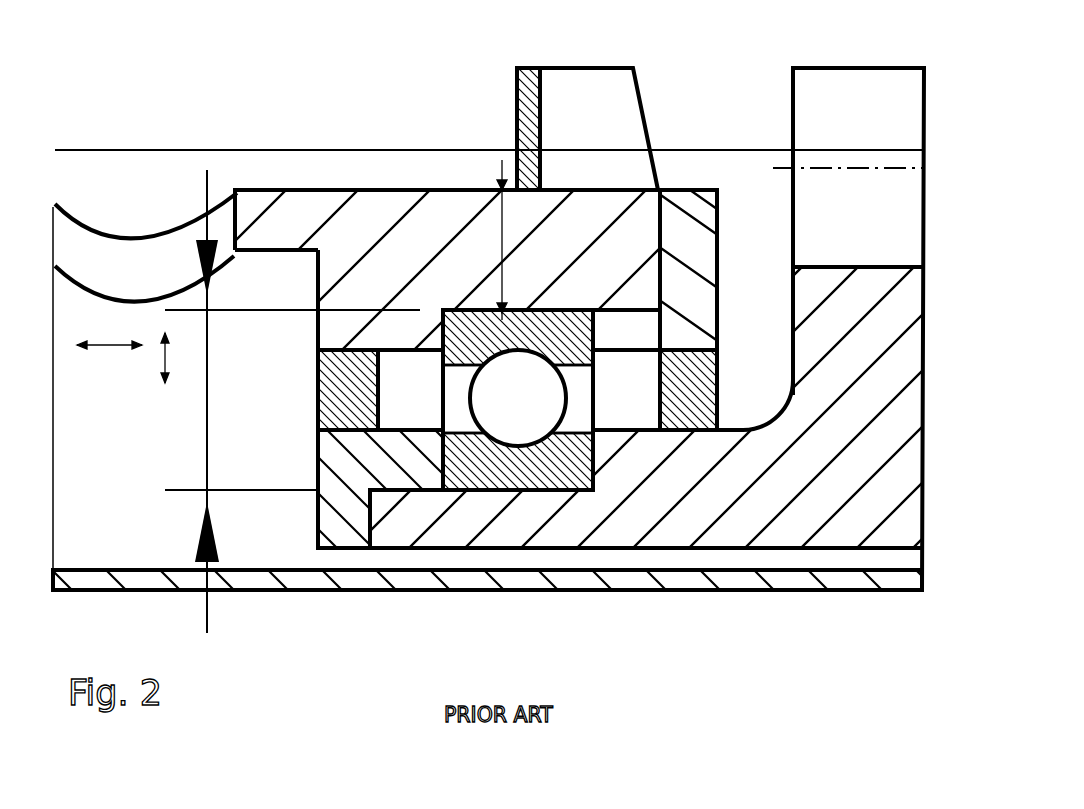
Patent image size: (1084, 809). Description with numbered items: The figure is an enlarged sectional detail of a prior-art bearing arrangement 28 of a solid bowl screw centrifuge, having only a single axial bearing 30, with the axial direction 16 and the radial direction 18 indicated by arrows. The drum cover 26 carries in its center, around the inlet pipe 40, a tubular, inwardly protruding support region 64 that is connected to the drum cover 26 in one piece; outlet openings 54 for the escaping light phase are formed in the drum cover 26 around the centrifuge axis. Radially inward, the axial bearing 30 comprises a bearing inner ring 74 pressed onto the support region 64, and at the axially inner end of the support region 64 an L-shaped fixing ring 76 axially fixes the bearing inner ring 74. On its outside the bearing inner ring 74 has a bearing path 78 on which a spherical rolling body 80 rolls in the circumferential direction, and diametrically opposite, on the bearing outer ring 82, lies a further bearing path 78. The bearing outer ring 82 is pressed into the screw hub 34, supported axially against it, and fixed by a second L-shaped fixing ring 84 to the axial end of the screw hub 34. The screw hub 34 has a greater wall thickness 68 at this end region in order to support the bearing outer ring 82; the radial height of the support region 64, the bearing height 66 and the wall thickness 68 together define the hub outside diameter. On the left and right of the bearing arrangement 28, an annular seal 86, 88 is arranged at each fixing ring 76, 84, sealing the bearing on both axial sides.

The axial direction 16 is at (117, 345).
The radial direction 18 is at (157, 333).
The drum cover 26 is at (837, 332).
The bearing arrangement 28 is at (507, 237).
The axial bearing 30 is at (457, 307).
The screw hub 34 is at (360, 213).
The inlet pipe 40 is at (785, 593).
The outlet openings 54 is at (860, 227).
The support region 64 is at (717, 477).
The bearing height 66 is at (210, 397).
The wall thickness 68 is at (561, 248).
The bearing inner ring 74 is at (463, 470).
The fixing ring 76 is at (347, 503).
The bearing path 78 is at (495, 335).
The rolling body 80 is at (538, 413).
The bearing outer ring 82 is at (577, 353).
The fixing ring 84 is at (645, 333).
The annular seal 86 is at (680, 388).
The annular seal 88 is at (330, 410).